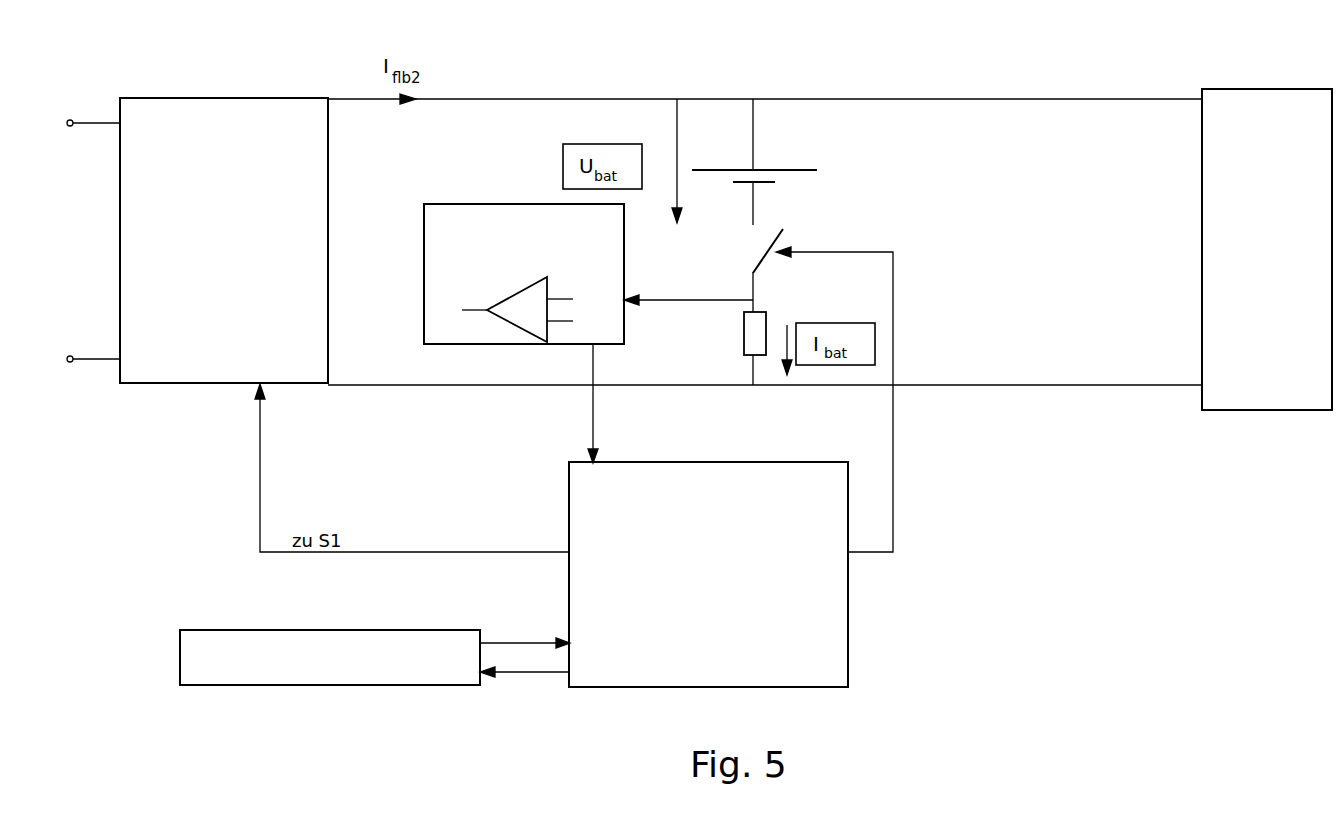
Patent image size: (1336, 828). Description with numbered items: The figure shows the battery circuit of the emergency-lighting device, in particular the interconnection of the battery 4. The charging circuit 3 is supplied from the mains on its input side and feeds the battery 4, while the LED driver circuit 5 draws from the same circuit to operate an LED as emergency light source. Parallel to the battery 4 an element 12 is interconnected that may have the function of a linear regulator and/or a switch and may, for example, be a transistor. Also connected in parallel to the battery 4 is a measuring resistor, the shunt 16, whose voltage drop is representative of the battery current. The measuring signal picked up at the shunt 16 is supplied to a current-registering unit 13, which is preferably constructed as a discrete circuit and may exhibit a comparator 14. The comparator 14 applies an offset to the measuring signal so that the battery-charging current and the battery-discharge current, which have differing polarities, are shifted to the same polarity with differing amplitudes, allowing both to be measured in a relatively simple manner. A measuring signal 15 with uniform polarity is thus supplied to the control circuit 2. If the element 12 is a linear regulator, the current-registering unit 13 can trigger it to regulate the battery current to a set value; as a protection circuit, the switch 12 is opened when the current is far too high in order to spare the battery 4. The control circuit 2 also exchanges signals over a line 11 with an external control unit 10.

The control circuit 2 is at (852, 611).
The charging circuit 3 is at (227, 98).
The battery 4 is at (756, 170).
The driver circuit 5 is at (1266, 411).
The external control unit 10 is at (325, 686).
The signal line to external control unit 11 is at (526, 674).
The element (linear regulator and/or switch) 12 is at (778, 243).
The current-registering unit 13 is at (424, 288).
The comparator 14 is at (512, 327).
The measuring signal 15 is at (596, 430).
The measuring resistor (shunt) 16 is at (744, 336).